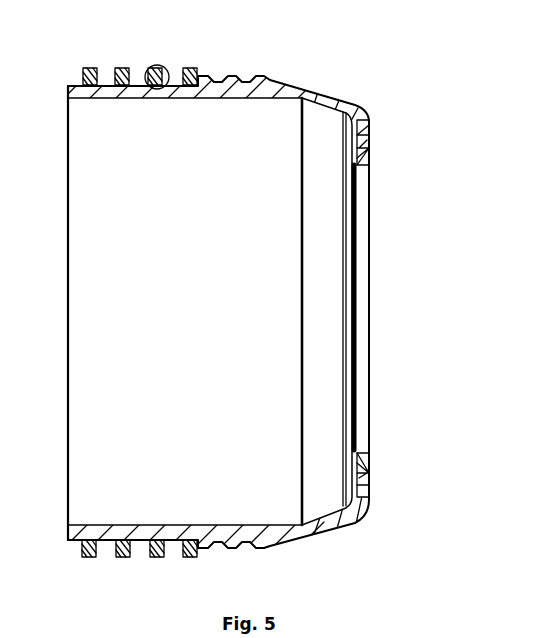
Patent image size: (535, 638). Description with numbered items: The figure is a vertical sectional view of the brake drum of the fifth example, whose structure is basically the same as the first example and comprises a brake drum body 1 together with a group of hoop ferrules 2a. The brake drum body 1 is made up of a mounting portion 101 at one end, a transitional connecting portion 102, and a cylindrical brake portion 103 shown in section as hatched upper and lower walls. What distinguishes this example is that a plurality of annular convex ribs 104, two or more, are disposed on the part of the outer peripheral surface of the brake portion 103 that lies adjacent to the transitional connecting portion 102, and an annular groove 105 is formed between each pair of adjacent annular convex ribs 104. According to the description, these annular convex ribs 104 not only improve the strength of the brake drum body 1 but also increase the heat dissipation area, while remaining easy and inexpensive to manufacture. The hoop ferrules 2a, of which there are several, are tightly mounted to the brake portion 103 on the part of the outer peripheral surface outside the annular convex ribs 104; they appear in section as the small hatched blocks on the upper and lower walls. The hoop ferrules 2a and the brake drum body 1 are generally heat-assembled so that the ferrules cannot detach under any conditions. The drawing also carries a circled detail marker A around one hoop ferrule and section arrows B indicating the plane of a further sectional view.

The brake drum body 1 is at (408, 332).
The mounting portion 101 is at (362, 225).
The transitional connecting portion 102 is at (340, 520).
The brake portion 103 is at (151, 525).
The annular convex rib 104 is at (222, 77).
The annular groove 105 is at (249, 74).
The hoop ferrule 2a is at (88, 68).
The detail A is at (159, 65).
The section B is at (108, 63).